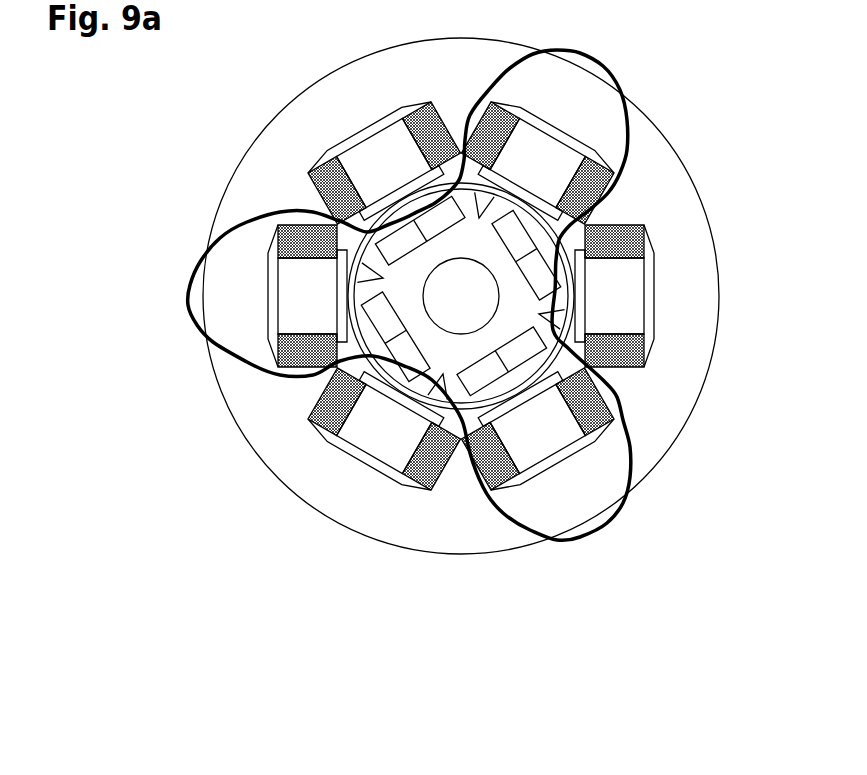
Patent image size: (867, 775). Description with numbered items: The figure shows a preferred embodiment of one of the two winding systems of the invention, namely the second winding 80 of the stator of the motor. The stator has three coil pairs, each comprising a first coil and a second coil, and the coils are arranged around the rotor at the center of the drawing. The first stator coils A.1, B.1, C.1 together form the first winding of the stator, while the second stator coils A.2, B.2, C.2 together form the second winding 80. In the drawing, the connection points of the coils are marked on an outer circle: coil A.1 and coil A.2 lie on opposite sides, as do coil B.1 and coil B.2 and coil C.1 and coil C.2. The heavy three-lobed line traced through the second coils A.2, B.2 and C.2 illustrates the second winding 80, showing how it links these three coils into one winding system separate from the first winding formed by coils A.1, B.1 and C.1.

The second winding 80 is at (597, 505).
The first stator coil A.1 is at (313, 423).
The second stator coil A.2 is at (612, 172).
The first stator coil B.1 is at (644, 232).
The second stator coil B.2 is at (277, 343).
The first stator coil C.1 is at (317, 165).
The second stator coil C.2 is at (612, 418).